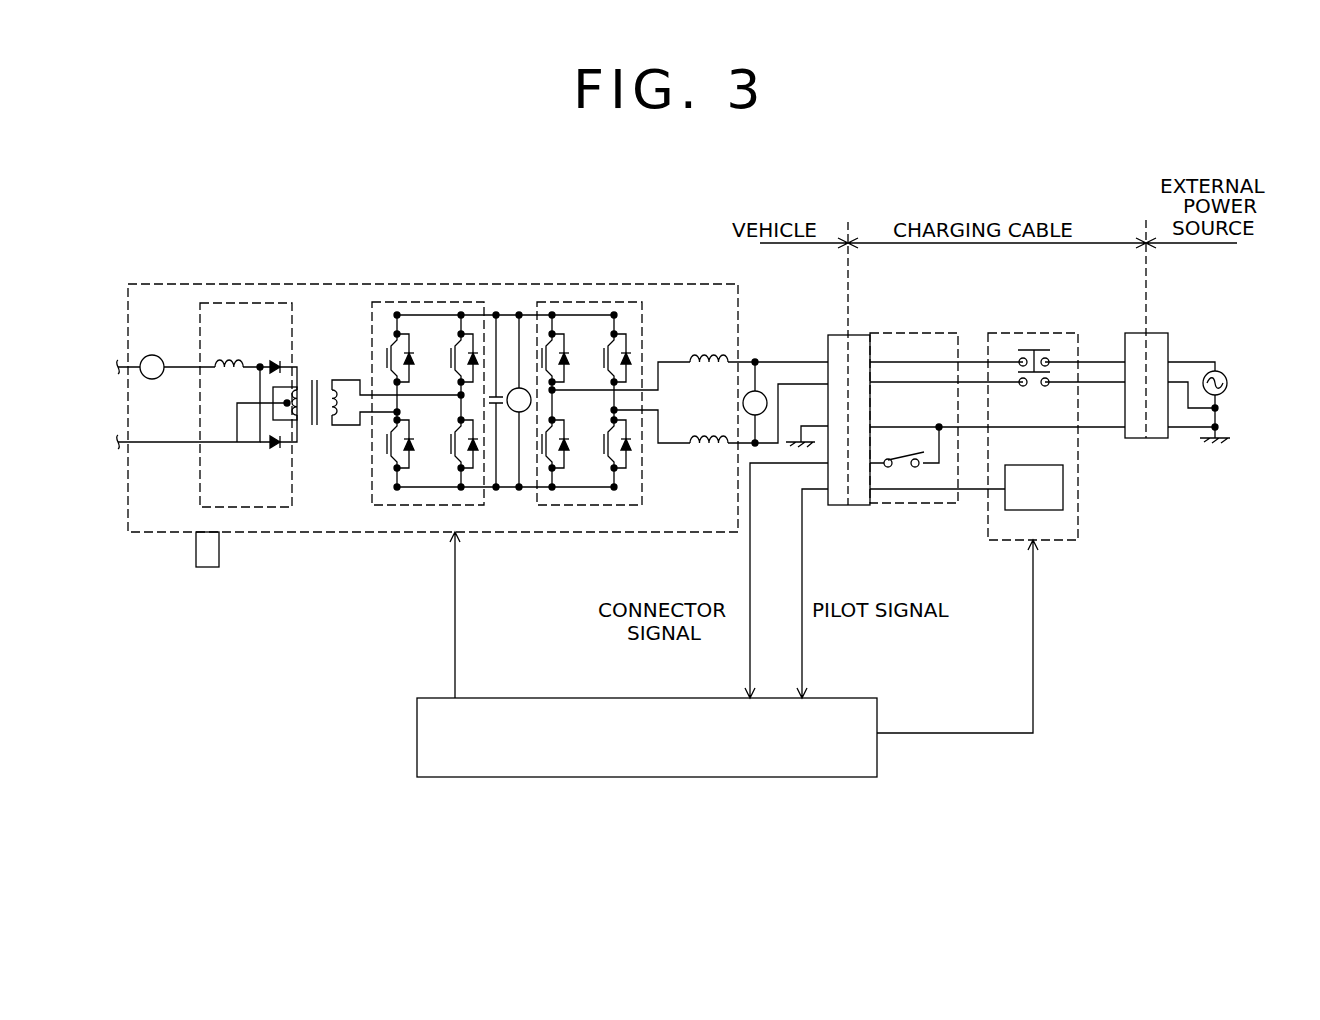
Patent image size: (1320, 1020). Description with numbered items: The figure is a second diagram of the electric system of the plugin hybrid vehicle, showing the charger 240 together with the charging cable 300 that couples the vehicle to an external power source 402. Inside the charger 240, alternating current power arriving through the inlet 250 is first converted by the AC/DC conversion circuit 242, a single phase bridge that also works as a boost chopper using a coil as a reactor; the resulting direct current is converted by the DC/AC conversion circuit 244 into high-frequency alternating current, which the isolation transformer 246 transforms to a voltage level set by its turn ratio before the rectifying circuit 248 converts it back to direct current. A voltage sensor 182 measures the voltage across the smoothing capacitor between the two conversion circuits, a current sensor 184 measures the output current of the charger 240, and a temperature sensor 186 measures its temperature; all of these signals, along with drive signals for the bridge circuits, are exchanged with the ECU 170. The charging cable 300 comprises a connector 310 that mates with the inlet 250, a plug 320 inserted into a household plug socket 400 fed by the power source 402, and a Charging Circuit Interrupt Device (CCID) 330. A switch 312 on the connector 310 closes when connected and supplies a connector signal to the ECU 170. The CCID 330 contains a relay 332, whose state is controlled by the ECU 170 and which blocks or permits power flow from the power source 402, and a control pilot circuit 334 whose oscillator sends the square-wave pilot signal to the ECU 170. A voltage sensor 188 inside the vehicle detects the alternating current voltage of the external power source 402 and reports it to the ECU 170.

The ECU 170 is at (790, 777).
The voltage sensor 182 is at (510, 507).
The current sensor 184 is at (152, 355).
The temperature sensor 186 is at (207, 567).
The voltage sensor 188 is at (755, 391).
The charger 240 is at (355, 534).
The AC/DC conversion circuit 242 is at (612, 507).
The DC/AC conversion circuit 244 is at (415, 507).
The isolation transformer 246 is at (320, 442).
The rectifying circuit 248 is at (255, 508).
The inlet 250 is at (828, 335).
The charging cable 300 is at (958, 330).
The connector 310 is at (868, 335).
The switch 312 is at (900, 472).
The plug 320 is at (1125, 335).
The Charging Circuit Interrupt Device (CCID) 330 is at (1070, 540).
The relay 332 is at (1005, 348).
The control pilot circuit 334 is at (1063, 487).
The plug socket 400 is at (1155, 438).
The external power source 402 is at (1215, 371).